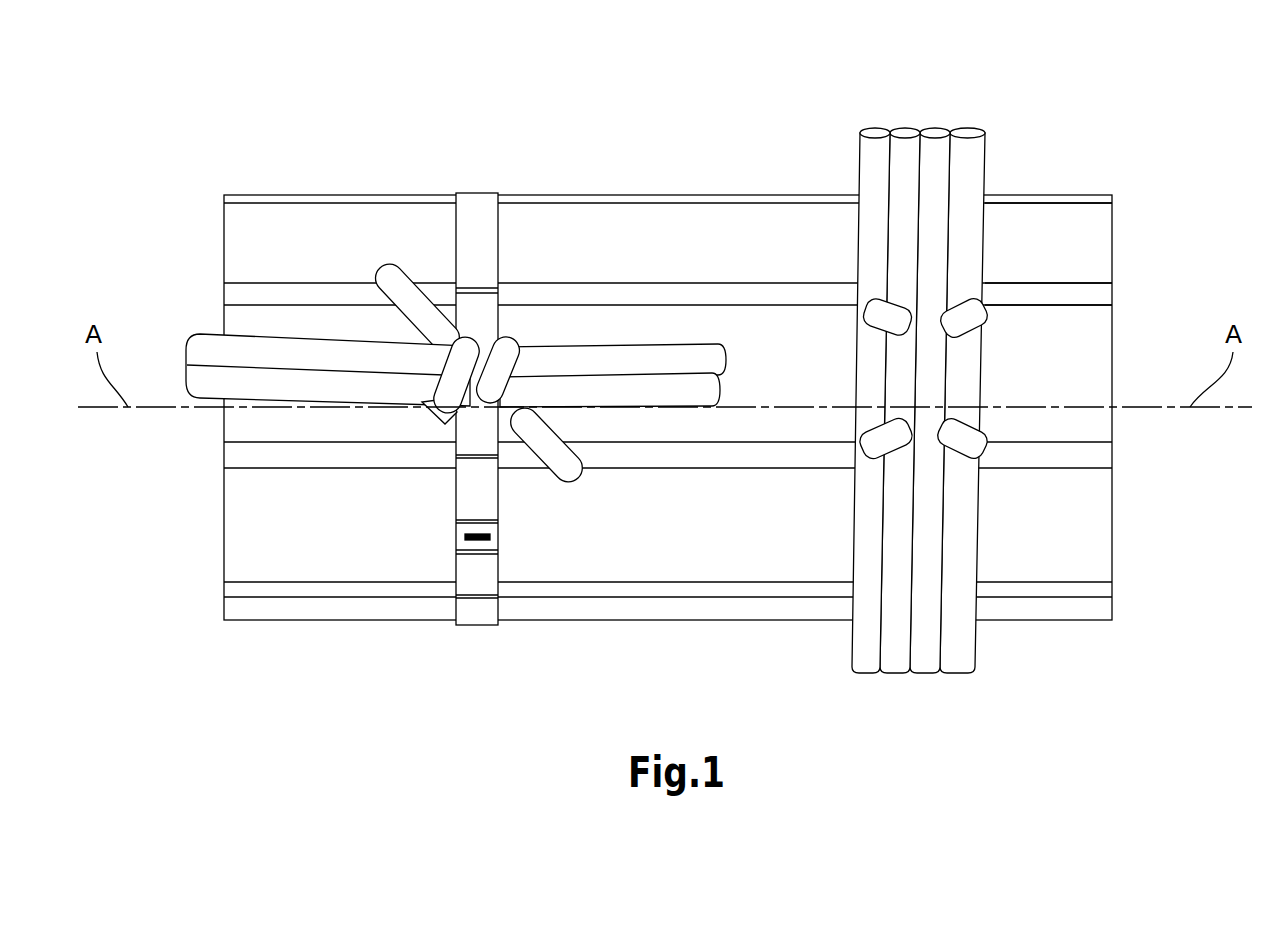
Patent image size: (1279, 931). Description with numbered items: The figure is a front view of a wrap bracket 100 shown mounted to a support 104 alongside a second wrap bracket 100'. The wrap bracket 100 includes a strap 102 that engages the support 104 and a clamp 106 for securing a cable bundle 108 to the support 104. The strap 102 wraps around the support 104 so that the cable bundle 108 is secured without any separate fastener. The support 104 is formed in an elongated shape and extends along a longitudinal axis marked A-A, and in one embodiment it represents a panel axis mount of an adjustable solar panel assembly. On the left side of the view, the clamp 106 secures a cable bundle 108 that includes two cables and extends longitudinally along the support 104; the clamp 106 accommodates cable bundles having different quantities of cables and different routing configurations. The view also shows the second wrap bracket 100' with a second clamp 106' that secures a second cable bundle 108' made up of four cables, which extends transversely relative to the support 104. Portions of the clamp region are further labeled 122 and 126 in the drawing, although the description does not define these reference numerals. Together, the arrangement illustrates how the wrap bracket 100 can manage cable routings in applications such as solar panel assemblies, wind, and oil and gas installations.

The wrap bracket 100 is at (668, 361).
The second wrap bracket 100' is at (1109, 237).
The strap 102 is at (475, 205).
The support 104 is at (630, 227).
The clamp 106 is at (305, 450).
The second clamp 106' is at (1057, 366).
The cable bundle 108 is at (434, 353).
The second cable bundle 108' is at (982, 372).
The crossing tube portion 122 is at (507, 350).
The tube end 126 is at (447, 388).